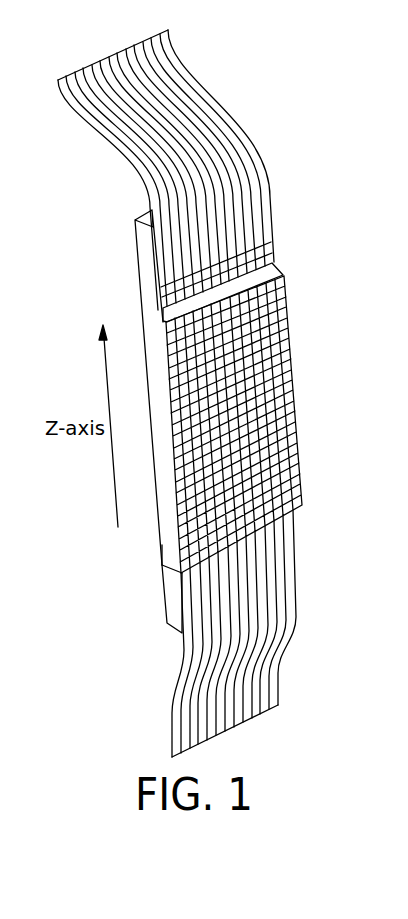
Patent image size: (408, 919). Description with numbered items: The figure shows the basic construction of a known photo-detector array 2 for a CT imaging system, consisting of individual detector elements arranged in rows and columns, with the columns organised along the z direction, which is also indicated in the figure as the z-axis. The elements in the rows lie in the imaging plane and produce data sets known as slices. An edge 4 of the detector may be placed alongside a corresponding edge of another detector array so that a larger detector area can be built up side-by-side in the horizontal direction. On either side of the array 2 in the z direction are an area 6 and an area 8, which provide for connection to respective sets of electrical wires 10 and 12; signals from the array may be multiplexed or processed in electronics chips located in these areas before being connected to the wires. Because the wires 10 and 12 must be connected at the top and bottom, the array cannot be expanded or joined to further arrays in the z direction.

The photo-detector array 2 is at (293, 345).
The edge 4 is at (167, 553).
The area 6 is at (170, 600).
The area 8 is at (147, 237).
The electrical wires 10 is at (170, 747).
The electrical wires 12 is at (170, 32).